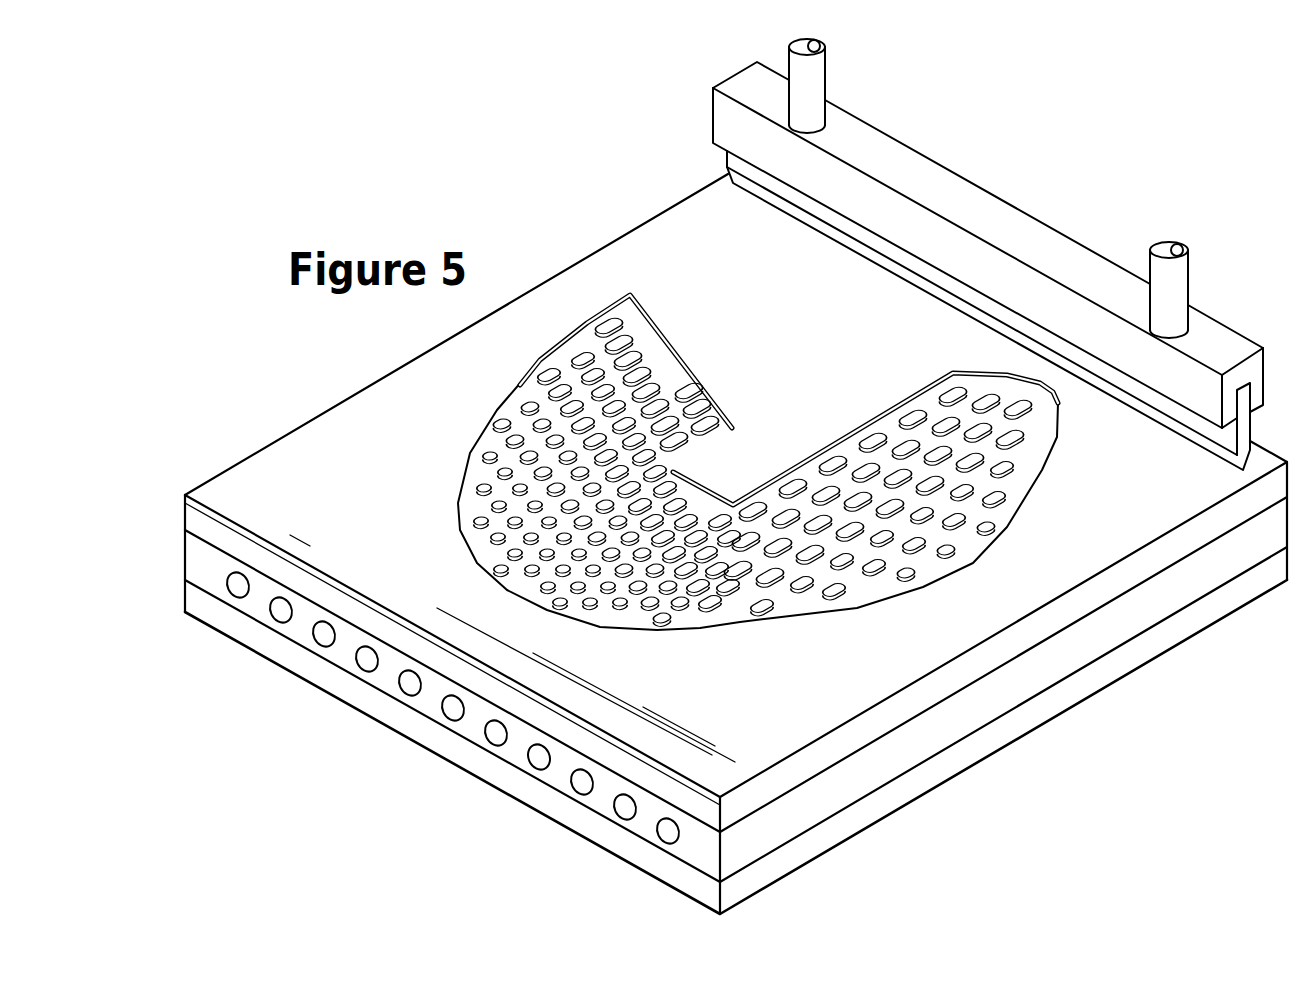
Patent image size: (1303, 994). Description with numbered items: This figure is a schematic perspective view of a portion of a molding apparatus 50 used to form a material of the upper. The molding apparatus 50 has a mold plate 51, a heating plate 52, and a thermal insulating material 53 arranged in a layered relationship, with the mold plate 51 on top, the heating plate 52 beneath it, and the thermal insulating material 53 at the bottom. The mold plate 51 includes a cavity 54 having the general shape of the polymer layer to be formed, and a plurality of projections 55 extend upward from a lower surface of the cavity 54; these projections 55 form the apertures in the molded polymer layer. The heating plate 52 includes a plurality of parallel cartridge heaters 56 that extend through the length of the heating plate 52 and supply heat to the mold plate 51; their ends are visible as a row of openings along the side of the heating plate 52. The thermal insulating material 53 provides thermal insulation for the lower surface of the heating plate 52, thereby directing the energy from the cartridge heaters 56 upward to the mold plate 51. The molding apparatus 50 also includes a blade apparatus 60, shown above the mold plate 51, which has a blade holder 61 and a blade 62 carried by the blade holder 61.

The molding apparatus 50 is at (510, 206).
The mold plate 51 is at (238, 456).
The heating plate 52 is at (181, 553).
The thermal insulating material 53 is at (210, 636).
The cavity 54 is at (472, 512).
The projections 55 is at (530, 404).
The cartridge heaters 56 is at (367, 665).
The blade apparatus 60 is at (1020, 206).
The blade holder 61 is at (1232, 338).
The blade 62 is at (1185, 438).